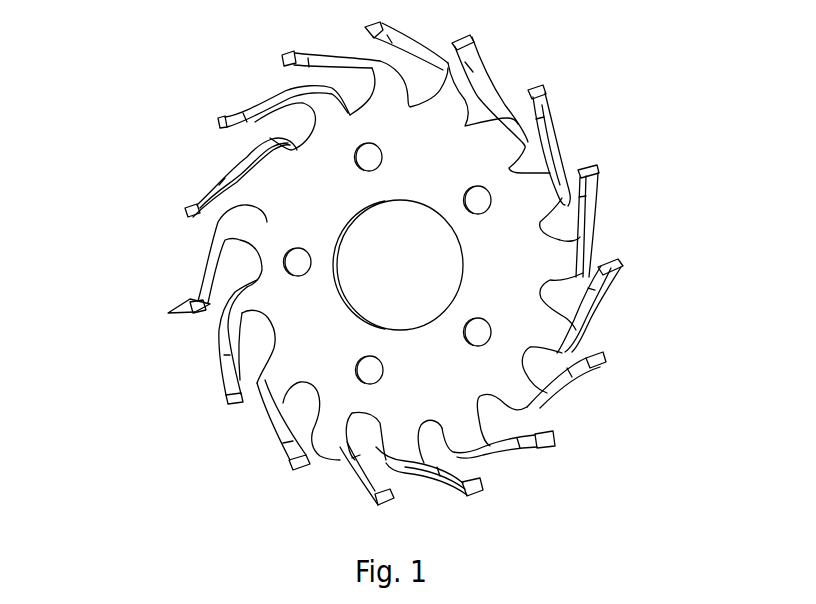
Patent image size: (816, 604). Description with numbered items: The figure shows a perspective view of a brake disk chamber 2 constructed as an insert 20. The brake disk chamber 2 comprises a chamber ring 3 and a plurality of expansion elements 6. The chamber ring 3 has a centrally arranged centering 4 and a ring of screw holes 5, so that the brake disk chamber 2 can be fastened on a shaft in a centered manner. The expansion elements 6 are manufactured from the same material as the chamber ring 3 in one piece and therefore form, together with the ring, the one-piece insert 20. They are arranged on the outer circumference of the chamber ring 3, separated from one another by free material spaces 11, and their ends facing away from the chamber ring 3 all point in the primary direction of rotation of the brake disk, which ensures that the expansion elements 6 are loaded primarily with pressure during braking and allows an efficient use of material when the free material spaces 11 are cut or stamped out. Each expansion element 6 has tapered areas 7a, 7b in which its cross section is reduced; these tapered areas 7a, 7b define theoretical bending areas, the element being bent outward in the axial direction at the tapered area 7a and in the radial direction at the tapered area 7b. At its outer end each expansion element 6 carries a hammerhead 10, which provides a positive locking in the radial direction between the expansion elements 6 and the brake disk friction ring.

The brake disk chamber 2 is at (152, 150).
The chamber ring 3 is at (323, 197).
The centering 4 is at (440, 265).
The screw holes 5 is at (483, 332).
The expansion elements 6 is at (275, 395).
The tapered area 7a is at (277, 167).
The tapered area 7b is at (553, 143).
The hammerhead 10 is at (542, 92).
The free material spaces 11 is at (367, 443).
The insert 20 is at (256, 254).